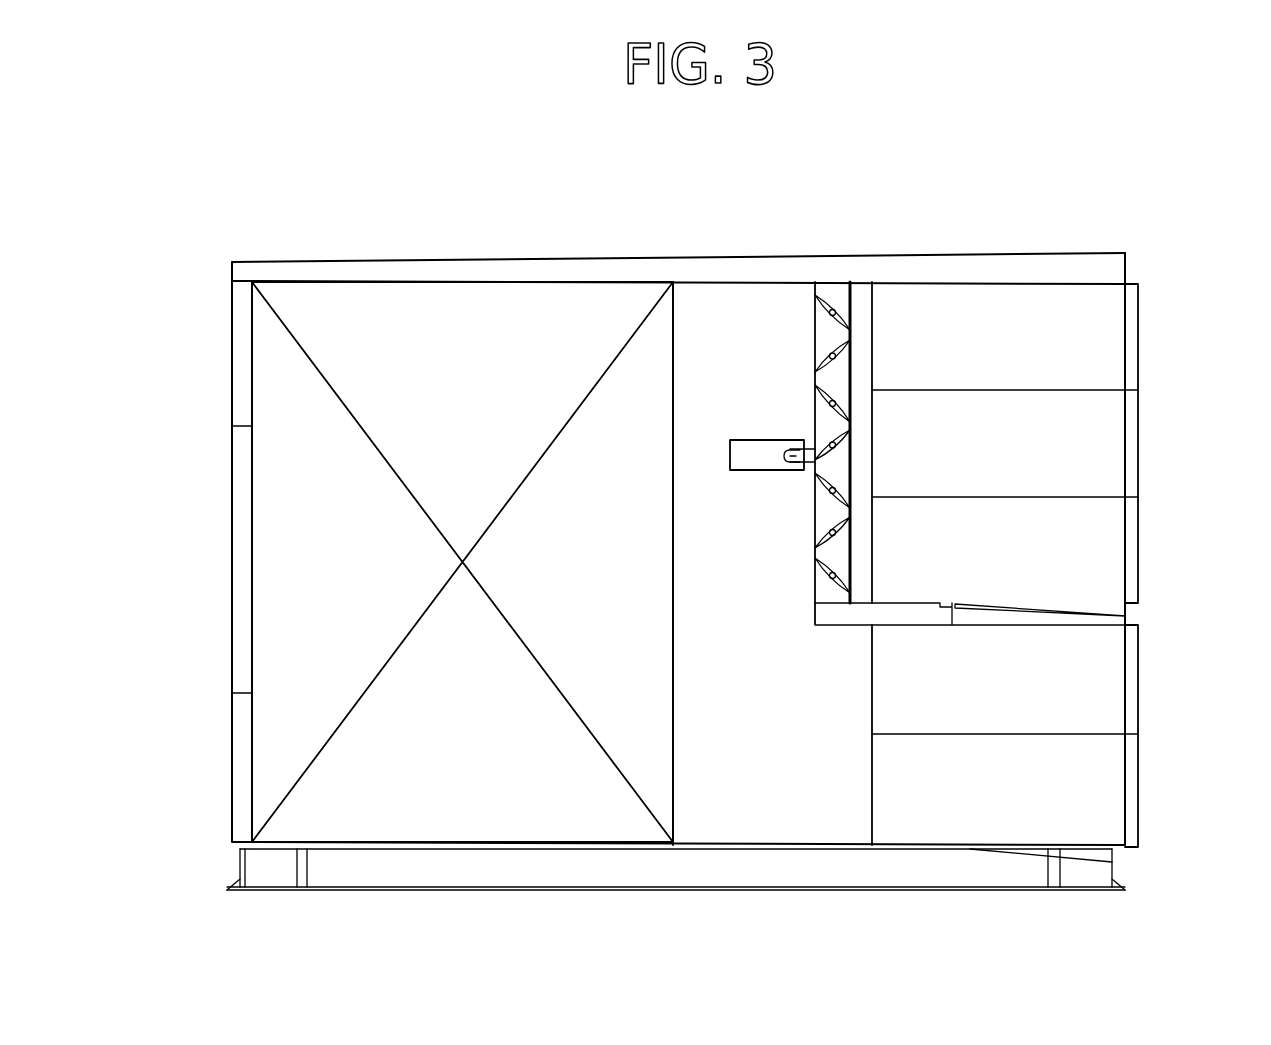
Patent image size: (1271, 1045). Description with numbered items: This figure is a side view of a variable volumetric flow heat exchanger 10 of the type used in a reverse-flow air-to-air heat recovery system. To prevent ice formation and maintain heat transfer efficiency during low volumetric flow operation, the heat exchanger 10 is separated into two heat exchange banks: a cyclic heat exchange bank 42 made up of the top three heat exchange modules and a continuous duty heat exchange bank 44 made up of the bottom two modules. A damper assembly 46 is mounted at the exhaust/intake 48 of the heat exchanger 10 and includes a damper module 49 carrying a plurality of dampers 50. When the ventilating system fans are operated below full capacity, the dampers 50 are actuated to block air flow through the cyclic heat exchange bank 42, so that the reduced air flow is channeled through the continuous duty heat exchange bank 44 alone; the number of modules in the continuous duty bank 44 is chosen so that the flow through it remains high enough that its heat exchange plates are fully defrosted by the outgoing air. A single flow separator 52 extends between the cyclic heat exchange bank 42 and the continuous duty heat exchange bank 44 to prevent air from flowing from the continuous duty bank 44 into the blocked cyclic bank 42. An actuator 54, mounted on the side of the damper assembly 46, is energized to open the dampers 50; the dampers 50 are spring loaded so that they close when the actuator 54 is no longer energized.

The variable volumetric flow heat exchanger 10 is at (207, 512).
The cyclic heat exchange bank 42 is at (1158, 442).
The continuous duty heat exchange bank 44 is at (1158, 738).
The damper assembly 46 is at (838, 228).
The exhaust/intake 48 is at (673, 523).
The damper module 49 is at (815, 333).
The damper 50 is at (850, 352).
The flow separator 52 is at (1140, 617).
The actuator 54 is at (755, 472).